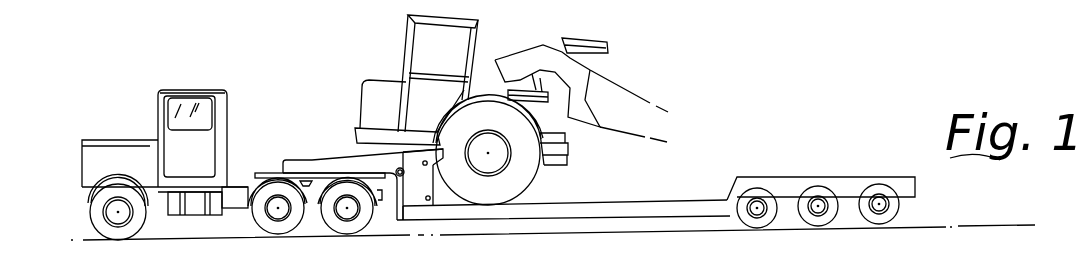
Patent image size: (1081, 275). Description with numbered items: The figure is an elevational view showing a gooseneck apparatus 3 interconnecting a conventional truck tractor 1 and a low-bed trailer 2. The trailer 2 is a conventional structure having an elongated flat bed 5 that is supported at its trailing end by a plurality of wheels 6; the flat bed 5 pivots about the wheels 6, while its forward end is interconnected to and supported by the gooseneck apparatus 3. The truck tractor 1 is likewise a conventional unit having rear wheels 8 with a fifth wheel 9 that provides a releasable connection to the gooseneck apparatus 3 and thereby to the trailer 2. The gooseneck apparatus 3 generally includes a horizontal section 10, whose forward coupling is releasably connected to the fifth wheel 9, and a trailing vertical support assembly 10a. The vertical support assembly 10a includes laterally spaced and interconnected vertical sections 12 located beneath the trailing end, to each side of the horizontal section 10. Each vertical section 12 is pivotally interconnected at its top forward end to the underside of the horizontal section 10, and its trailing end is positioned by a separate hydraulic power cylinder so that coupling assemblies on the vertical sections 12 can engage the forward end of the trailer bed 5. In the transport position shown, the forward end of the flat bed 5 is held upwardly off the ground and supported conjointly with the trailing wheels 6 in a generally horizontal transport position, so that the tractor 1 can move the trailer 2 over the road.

The truck tractor 1 is at (233, 94).
The low-bed trailer 2 is at (599, 194).
The gooseneck apparatus 3 is at (393, 200).
The flat bed 5 is at (587, 206).
The wheels 6 is at (853, 185).
The rear wheels 8 is at (310, 222).
The fifth wheel 9 is at (302, 168).
The horizontal section 10 is at (333, 154).
The vertical support assembly 10a is at (397, 209).
The vertical sections 12 is at (439, 192).